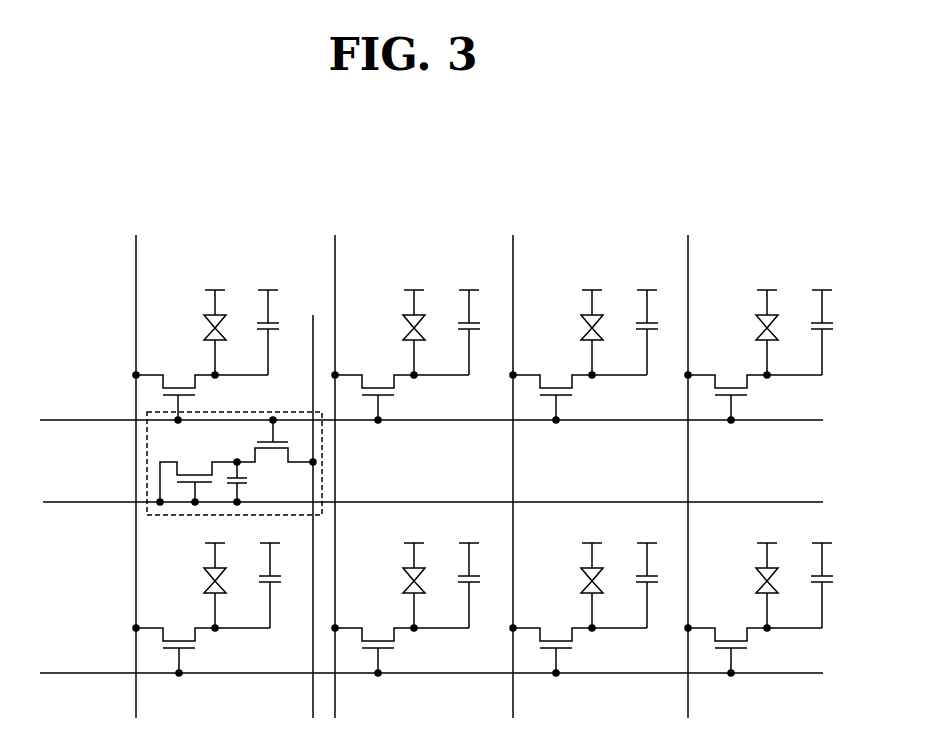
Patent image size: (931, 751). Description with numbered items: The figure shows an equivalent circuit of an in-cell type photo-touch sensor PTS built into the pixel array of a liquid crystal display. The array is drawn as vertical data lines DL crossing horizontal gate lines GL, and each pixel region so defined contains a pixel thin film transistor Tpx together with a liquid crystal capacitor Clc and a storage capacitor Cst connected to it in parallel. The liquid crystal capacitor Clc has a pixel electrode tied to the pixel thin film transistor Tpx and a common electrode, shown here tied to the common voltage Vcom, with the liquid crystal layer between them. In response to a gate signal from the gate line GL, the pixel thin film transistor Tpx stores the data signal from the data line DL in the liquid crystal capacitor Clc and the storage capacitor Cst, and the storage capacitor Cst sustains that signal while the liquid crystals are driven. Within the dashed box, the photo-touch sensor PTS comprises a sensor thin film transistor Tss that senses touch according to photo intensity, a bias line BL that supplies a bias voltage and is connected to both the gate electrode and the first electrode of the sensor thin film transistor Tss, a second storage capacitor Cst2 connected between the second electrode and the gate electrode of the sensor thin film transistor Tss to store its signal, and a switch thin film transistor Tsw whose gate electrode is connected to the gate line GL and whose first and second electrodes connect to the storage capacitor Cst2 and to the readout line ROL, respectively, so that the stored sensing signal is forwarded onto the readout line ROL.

The data line DL is at (136, 256).
The gate line GL is at (100, 420).
The bias line BL is at (100, 502).
The readout line ROL is at (313, 690).
The photo-touch sensor PTS is at (322, 466).
The pixel thin film transistor Tpx is at (194, 405).
The common voltage Vcom is at (212, 282).
The liquid crystal capacitor Clc is at (203, 334).
The storage capacitor Cst is at (255, 332).
The switch thin film transistor Tsw is at (270, 441).
The sensor thin film transistor Tss is at (197, 476).
The storage capacitor Cst2 is at (262, 482).